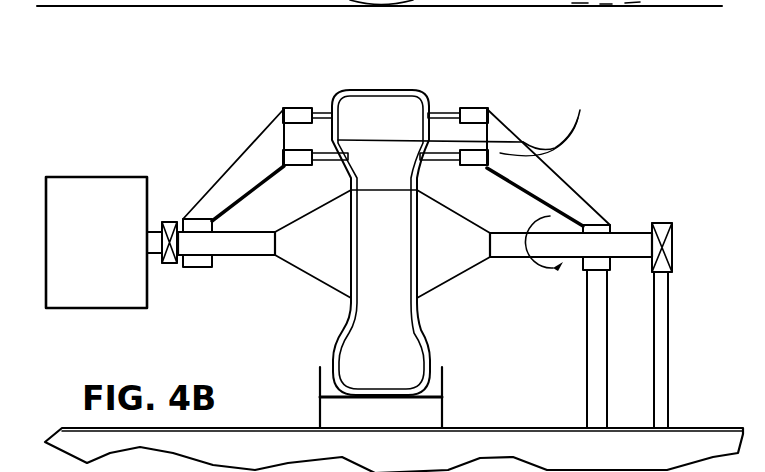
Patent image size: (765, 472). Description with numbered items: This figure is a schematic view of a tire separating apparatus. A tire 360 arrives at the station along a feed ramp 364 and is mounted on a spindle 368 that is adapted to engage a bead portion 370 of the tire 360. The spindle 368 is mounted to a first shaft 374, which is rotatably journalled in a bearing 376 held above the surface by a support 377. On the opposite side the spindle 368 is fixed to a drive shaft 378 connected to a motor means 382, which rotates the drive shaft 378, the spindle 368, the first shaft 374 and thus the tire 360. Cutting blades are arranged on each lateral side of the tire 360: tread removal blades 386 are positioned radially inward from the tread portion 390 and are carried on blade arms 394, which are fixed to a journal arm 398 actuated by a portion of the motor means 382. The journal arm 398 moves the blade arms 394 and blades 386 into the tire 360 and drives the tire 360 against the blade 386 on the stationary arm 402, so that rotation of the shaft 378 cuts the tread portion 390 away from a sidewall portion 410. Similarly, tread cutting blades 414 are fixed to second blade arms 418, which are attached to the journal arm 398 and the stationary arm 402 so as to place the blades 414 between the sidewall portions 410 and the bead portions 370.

The tire 360 is at (438, 336).
The feed ramp 364 is at (445, 417).
The spindle 368 is at (320, 283).
The bead portion 370 is at (345, 176).
The first shaft 374 is at (627, 233).
The bearing 376 is at (673, 240).
The support 377 is at (668, 362).
The drive shaft 378 is at (245, 257).
The motor means 382 is at (73, 177).
The tread removal blades 386 is at (445, 110).
The tread portion 390 is at (425, 138).
The blade arms 394 is at (283, 108).
The journal arm 398 is at (220, 182).
The stationary arm 402 is at (560, 177).
The sidewall portion 410 is at (350, 140).
The tread cutting blades 414 is at (548, 121).
The second blade arms 418 is at (297, 166).